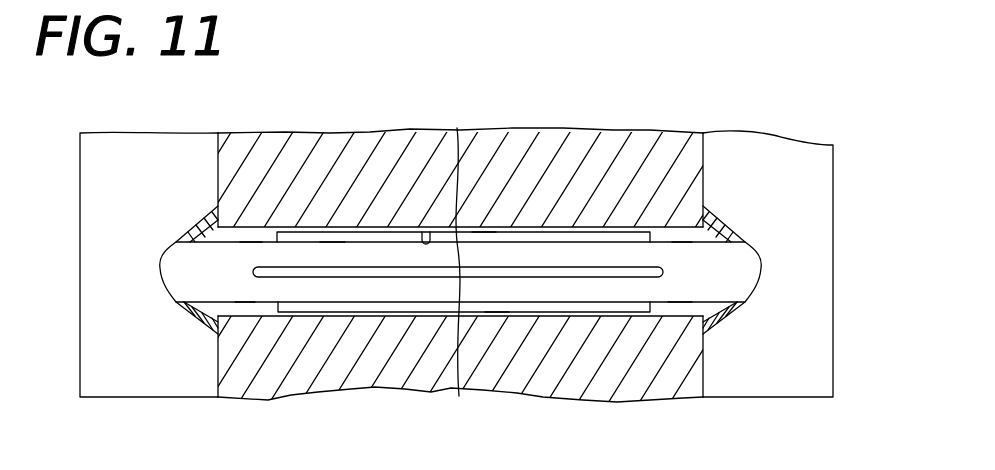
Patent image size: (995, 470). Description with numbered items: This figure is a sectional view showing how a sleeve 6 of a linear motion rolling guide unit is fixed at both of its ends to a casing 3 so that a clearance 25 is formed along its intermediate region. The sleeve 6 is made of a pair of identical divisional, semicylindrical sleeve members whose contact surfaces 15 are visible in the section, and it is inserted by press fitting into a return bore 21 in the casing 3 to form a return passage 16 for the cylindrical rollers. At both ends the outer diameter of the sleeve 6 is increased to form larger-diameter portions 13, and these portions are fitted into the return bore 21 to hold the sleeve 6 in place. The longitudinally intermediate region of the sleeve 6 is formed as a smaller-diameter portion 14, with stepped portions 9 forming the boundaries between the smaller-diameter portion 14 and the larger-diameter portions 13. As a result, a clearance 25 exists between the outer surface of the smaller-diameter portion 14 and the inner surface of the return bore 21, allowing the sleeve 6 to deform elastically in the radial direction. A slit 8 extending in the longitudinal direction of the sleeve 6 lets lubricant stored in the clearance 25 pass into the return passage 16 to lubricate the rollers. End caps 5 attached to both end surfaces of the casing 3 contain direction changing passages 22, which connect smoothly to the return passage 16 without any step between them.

The casing 3 is at (508, 180).
The end cap 5 is at (142, 190).
The sleeve 6 is at (620, 232).
The slit 8 is at (553, 270).
The stepped portion 9 is at (290, 226).
The larger-diameter portion 13 is at (250, 227).
The smaller-diameter portion 14 is at (598, 232).
The contact surface 15 is at (333, 237).
The return passage 16 is at (361, 253).
The return bore 21 is at (429, 232).
The direction changing passage 22 is at (164, 257).
The clearance 25 is at (484, 232).